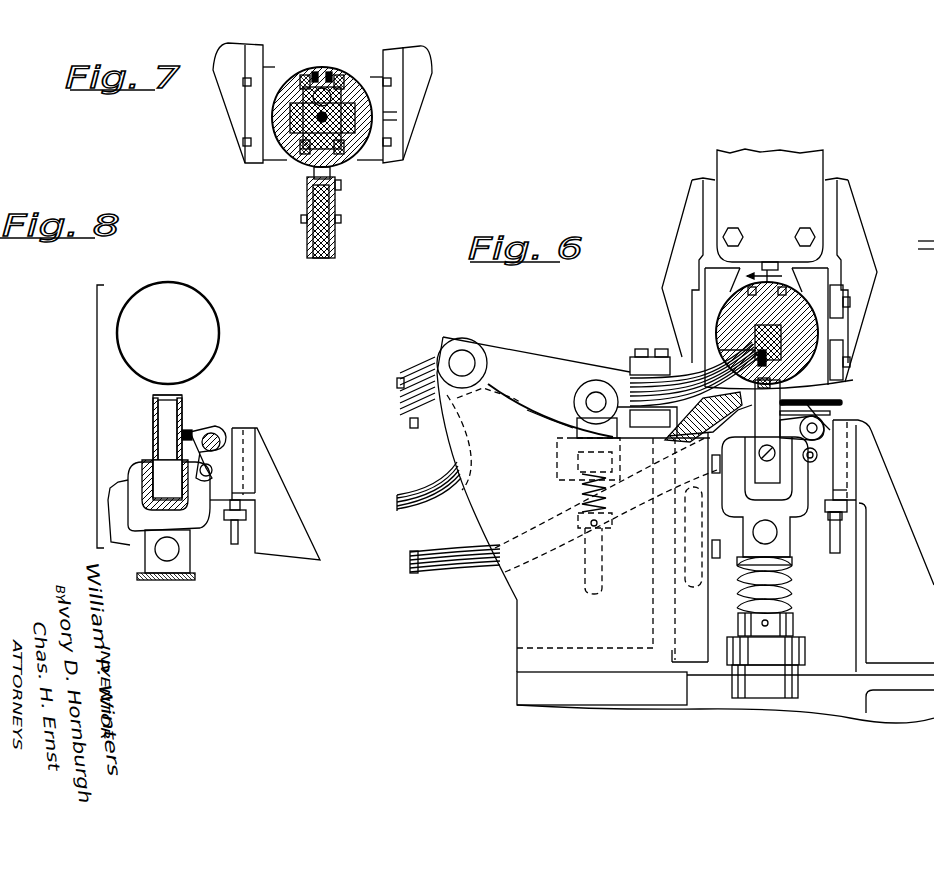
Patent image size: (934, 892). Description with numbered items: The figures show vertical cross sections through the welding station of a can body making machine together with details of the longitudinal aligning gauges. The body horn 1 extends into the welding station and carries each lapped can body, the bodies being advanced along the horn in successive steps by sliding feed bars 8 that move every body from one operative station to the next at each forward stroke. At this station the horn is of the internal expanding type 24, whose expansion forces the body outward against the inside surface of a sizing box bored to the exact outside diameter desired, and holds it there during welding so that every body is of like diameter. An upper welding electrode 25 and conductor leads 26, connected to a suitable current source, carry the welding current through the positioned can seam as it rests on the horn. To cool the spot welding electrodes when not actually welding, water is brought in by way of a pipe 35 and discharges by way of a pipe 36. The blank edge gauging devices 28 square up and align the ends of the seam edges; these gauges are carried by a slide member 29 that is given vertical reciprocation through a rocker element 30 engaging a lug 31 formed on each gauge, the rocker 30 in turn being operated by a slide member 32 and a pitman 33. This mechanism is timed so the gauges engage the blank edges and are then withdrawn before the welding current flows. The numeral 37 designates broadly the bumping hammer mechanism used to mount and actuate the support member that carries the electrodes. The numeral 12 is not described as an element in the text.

In FIG. 7, the body horn 1 is at (340, 160).
In FIG. 6, the body horn 1 is at (745, 320).
In FIG. 7, the sliding feed bars 8 is at (312, 76).
In FIG. 6, the spring 12 is at (736, 580).
In FIG. 7, the internal expanding type 24 is at (283, 143).
In FIG. 6, the upper welding electrode 25 is at (722, 360).
In FIG. 6, the conductor leads 26 is at (417, 520).
In FIG. 8, the blank edge gauging devices 28 is at (153, 395).
In FIG. 6, the blank edge gauging devices 28 is at (783, 383).
In FIG. 8, the slide member 29 is at (165, 432).
In FIG. 8, the rocker element 30 is at (190, 440).
In FIG. 6, the rocker element 30 is at (824, 428).
In FIG. 8, the lug 31 is at (187, 430).
In FIG. 8, the slide member 32 is at (215, 490).
In FIG. 6, the slide member 32 is at (815, 485).
In FIG. 8, the pitman 33 is at (235, 545).
In FIG. 6, the pitman 33 is at (842, 545).
In FIG. 6, the pipe 35 is at (830, 414).
In FIG. 6, the pipe 36 is at (842, 402).
In FIG. 7, the bumping hammer mechanism 37 is at (337, 250).
In FIG. 8, the bumping hammer mechanism 37 is at (150, 515).
In FIG. 6, the bumping hammer mechanism 37 is at (707, 518).